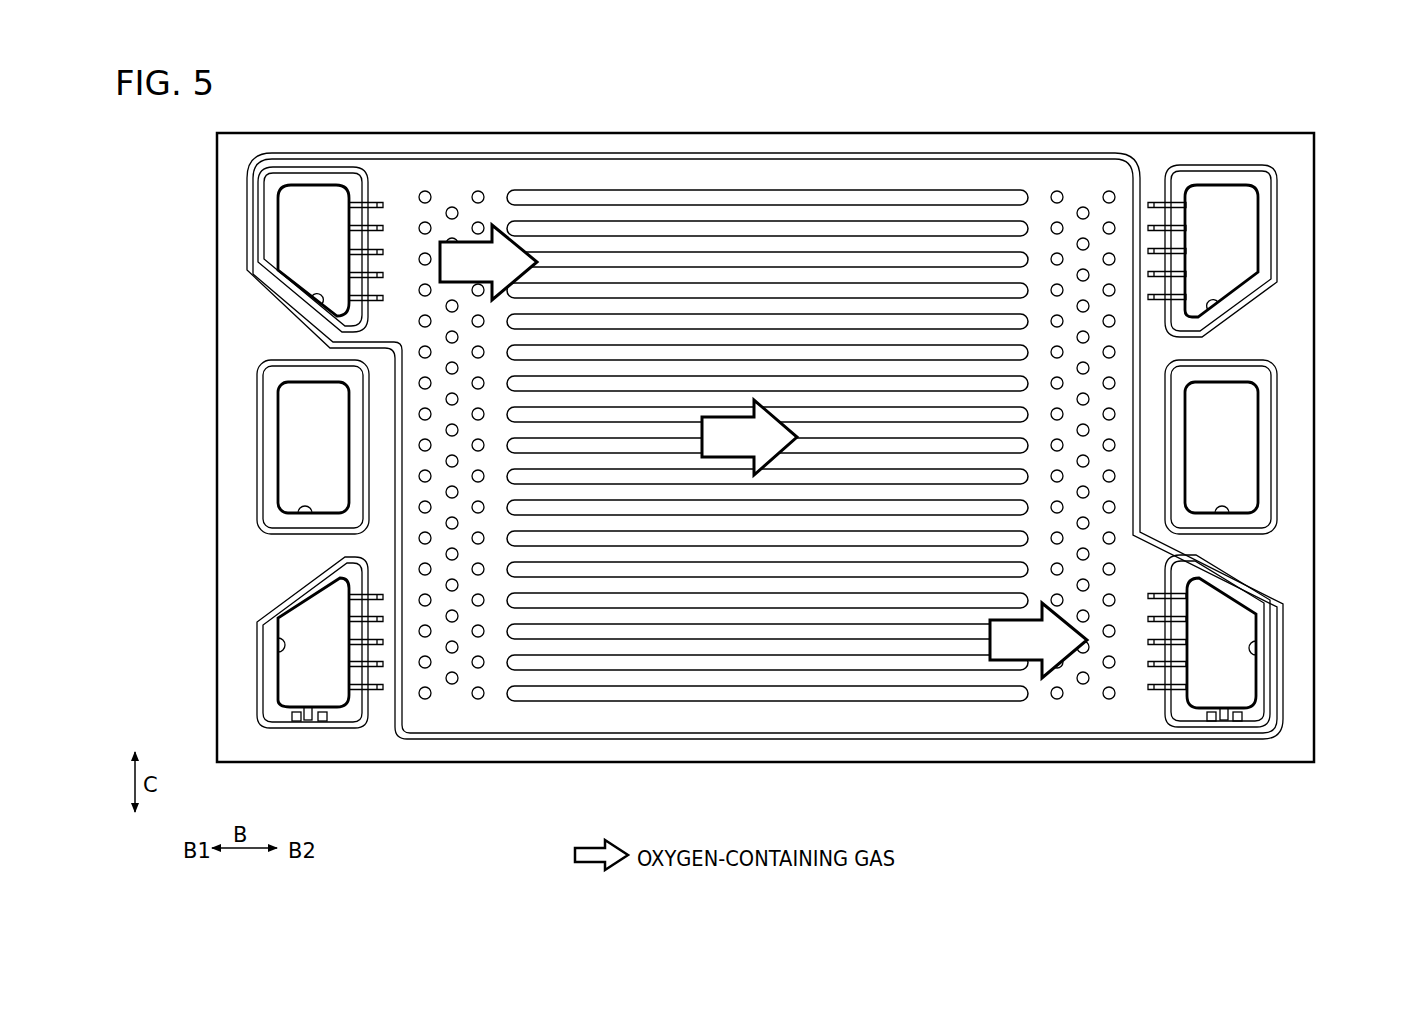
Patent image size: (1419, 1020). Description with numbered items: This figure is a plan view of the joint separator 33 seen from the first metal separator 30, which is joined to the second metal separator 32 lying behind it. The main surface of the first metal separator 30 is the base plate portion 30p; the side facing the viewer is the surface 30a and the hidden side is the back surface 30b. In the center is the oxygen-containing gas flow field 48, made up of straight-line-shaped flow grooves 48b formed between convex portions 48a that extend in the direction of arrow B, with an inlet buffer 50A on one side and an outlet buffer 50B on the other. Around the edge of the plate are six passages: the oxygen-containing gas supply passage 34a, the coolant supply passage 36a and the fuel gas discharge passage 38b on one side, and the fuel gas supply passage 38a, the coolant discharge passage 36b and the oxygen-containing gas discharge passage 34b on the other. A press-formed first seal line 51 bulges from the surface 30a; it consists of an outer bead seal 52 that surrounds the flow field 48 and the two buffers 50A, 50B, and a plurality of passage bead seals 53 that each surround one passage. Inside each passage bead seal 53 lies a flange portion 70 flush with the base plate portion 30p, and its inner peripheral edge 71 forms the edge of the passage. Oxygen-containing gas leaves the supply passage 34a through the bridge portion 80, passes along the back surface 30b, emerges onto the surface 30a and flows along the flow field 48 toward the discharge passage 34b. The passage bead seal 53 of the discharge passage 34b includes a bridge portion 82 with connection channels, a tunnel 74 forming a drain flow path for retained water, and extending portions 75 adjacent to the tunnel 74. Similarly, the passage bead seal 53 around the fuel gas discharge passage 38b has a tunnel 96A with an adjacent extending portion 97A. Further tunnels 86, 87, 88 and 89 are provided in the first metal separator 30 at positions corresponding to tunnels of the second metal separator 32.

The joint separator 33 is at (1366, 89).
The first metal separator 30 is at (1173, 129).
The second metal separator 32 is at (1217, 129).
The surface 30a is at (535, 716).
The back surface 30b is at (598, 716).
The base plate portion 30p is at (250, 592).
The bridge portion 80 is at (378, 196).
The inlet buffer 50A is at (488, 190).
The oxygen-containing gas flow field 48 is at (668, 90).
The convex portions 48a is at (578, 232).
The straight-line-shaped flow grooves 48b is at (646, 215).
The outlet buffer 50B is at (1120, 190).
The passage bead seals 53 is at (1273, 197).
The fuel gas supply passage 38a is at (1237, 233).
The flange portions 70 is at (1263, 258).
The inner peripheral edge 71 is at (1218, 299).
The tunnel 88 is at (1183, 298).
The oxygen-containing gas supply passage 34a is at (297, 212).
The tunnel 87 is at (383, 253).
The coolant supply passage 36a is at (298, 472).
The fuel gas discharge passage 38b is at (300, 657).
The extending portion 97A is at (296, 720).
The tunnel 96A is at (308, 722).
The tunnel 89 is at (380, 692).
The coolant discharge passage 36b is at (1237, 423).
The oxygen-containing gas discharge passage 34b is at (1237, 672).
The extending portions 75 is at (1243, 716).
The tunnel 86 is at (1148, 643).
The bridge portion 82 is at (1146, 705).
The outer bead seal 52 is at (1212, 736).
The tunnel 74 is at (1226, 720).
The first seal line 51 is at (1357, 826).